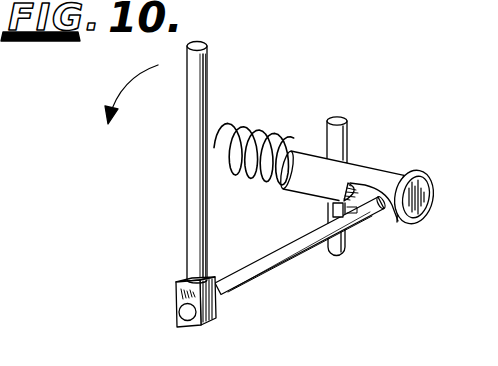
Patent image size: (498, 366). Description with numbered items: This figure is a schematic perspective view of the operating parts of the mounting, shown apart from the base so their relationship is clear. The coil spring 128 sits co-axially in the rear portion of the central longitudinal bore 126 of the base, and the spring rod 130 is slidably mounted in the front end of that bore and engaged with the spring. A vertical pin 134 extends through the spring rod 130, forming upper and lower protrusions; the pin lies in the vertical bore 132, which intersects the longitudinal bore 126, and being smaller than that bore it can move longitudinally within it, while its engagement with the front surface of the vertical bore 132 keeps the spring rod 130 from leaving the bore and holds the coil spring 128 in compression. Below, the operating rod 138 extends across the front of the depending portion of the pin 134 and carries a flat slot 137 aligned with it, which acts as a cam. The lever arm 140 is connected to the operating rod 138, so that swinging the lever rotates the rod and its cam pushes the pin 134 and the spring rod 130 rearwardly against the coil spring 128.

The central longitudinal bore 126 is at (330, 4).
The vertical bore 132 is at (430, 4).
The coil spring 128 is at (285, 137).
The spring rod 130 is at (382, 166).
The vertical pin 134 is at (348, 141).
The flat slot 137 is at (348, 237).
The operating rod 138 is at (291, 258).
The lever arm 140 is at (196, 200).